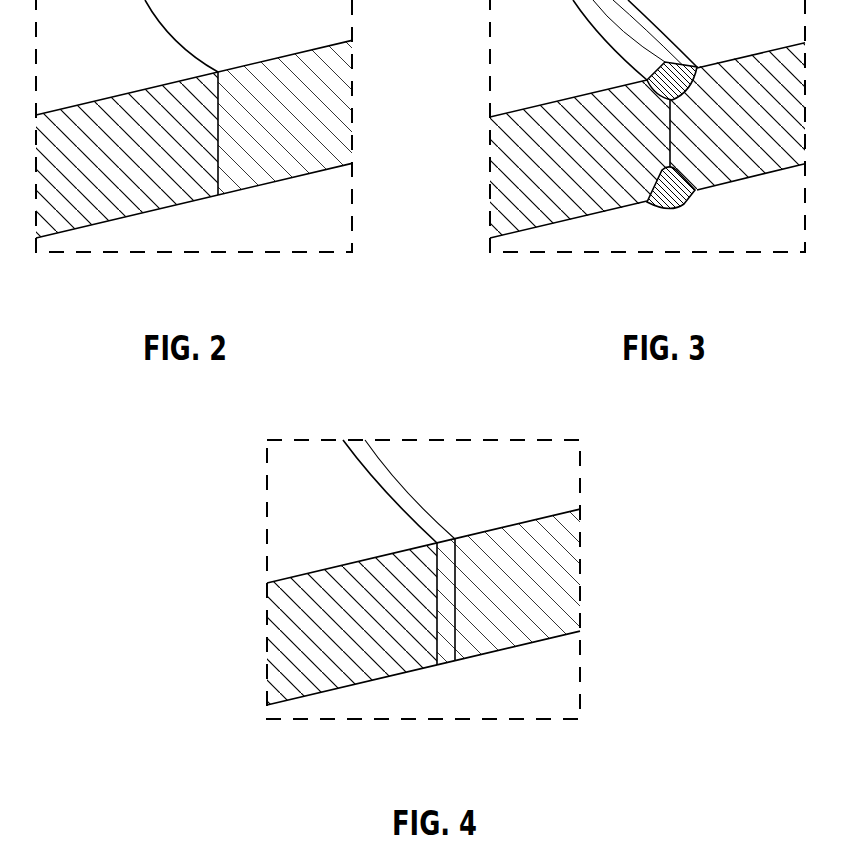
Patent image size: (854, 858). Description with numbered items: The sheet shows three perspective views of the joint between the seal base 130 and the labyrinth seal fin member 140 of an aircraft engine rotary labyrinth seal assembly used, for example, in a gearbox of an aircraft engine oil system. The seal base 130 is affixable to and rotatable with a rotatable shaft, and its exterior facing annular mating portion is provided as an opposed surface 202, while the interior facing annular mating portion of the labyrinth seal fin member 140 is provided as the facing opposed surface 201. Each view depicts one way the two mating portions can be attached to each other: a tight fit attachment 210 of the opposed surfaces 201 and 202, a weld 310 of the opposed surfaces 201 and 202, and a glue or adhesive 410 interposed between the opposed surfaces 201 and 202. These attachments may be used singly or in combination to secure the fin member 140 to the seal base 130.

In FIG. 2, the seal base 130 is at (274, 33).
In FIG. 3, the seal base 130 is at (738, 27).
In FIG. 4, the seal base 130 is at (507, 493).
In FIG. 2, the labyrinth seal fin member 140 is at (125, 51).
In FIG. 3, the labyrinth seal fin member 140 is at (564, 60).
In FIG. 4, the labyrinth seal fin member 140 is at (342, 507).
In FIG. 2, the opposed surface 201 is at (155, 193).
In FIG. 3, the opposed surface 201 is at (605, 182).
In FIG. 4, the opposed surface 201 is at (400, 658).
In FIG. 2, the opposed surface 202 is at (233, 148).
In FIG. 3, the opposed surface 202 is at (707, 143).
In FIG. 4, the opposed surface 202 is at (475, 595).
In FIG. 2, the tight fit attachment 210 is at (218, 195).
In FIG. 3, the weld 310 is at (670, 211).
In FIG. 4, the adhesive 410 is at (447, 645).